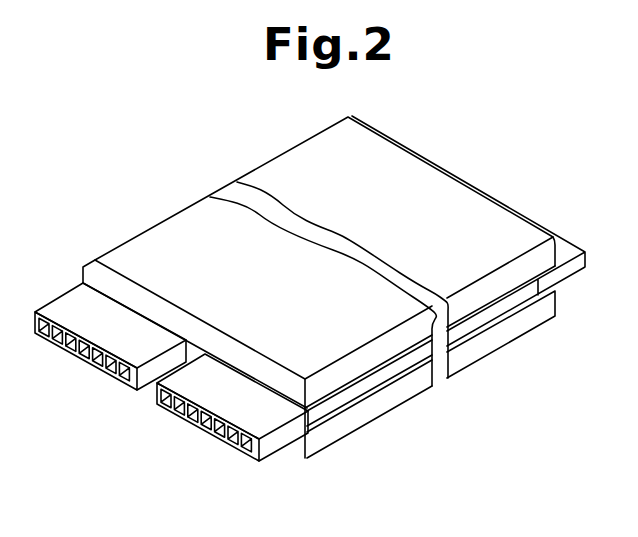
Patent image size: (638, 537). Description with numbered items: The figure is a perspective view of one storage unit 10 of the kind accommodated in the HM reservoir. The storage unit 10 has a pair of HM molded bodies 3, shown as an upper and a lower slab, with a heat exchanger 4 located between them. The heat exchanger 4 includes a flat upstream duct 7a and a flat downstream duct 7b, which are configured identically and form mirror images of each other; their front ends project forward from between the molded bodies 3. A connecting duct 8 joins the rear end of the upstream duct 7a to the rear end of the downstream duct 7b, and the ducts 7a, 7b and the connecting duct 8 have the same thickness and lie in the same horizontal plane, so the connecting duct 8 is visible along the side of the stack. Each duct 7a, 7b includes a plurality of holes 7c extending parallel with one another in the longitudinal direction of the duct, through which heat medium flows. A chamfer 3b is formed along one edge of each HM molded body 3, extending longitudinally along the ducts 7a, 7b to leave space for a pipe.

The storage unit 10 is at (140, 220).
The HM molded body 3 is at (213, 201).
The chamfer 3b is at (87, 264).
The heat exchanger 4 is at (150, 414).
The upstream duct 7a is at (268, 448).
The downstream duct 7b is at (70, 296).
The holes 7c is at (97, 367).
The connecting duct 8 is at (473, 187).